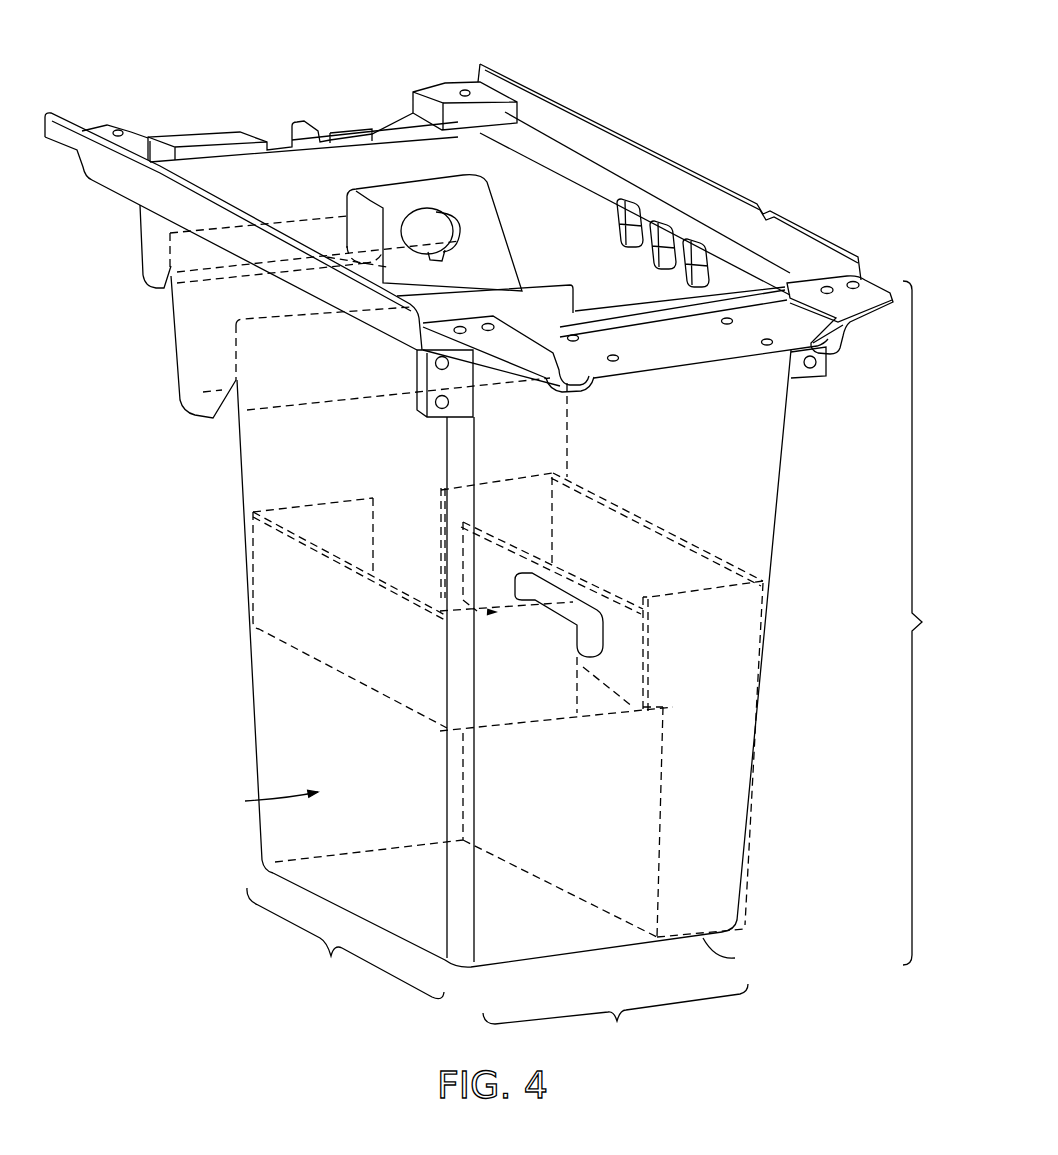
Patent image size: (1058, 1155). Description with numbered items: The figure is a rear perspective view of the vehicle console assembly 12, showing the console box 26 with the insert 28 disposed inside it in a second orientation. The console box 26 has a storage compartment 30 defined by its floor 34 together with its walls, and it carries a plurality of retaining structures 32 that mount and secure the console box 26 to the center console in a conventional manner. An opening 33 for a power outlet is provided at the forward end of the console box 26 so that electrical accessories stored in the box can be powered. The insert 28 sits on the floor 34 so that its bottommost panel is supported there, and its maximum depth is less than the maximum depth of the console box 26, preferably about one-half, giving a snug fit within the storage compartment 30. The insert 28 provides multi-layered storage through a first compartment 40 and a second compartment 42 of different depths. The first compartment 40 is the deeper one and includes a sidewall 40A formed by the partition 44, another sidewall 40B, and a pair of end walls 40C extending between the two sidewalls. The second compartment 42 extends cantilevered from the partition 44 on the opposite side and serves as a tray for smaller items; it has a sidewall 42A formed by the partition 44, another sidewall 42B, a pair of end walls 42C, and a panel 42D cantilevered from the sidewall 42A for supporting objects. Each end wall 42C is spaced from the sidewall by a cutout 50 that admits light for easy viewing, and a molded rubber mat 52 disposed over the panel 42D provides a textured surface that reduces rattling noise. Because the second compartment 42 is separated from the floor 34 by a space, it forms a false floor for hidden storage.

The vehicle console assembly 12 is at (738, 47).
The console box 26 is at (803, 195).
The insert 28 is at (716, 486).
The storage compartment 30 is at (590, 253).
The retaining structures 32 is at (550, 95).
The opening 33 is at (461, 244).
The floor 34 is at (517, 923).
The first compartment 40 is at (660, 563).
The sidewall 40A is at (658, 881).
The sidewall 40B is at (748, 727).
The end walls 40C is at (716, 592).
The second compartment 42 is at (407, 567).
The sidewall 42A is at (497, 572).
The sidewall 42B is at (367, 643).
The end walls 42C is at (323, 517).
The panel 42D is at (601, 713).
The partition 44 is at (575, 575).
The cutout 50 is at (373, 536).
The molded rubber mat 52 is at (594, 680).